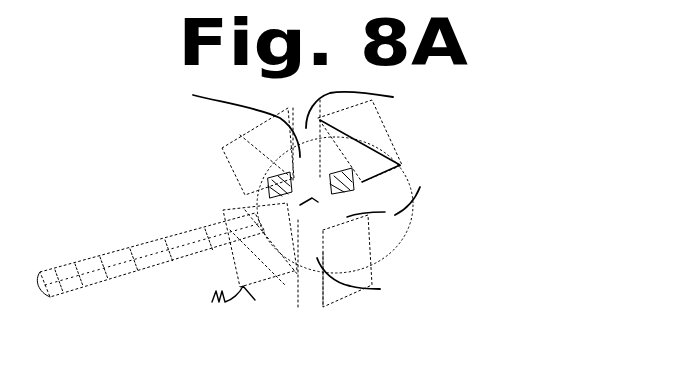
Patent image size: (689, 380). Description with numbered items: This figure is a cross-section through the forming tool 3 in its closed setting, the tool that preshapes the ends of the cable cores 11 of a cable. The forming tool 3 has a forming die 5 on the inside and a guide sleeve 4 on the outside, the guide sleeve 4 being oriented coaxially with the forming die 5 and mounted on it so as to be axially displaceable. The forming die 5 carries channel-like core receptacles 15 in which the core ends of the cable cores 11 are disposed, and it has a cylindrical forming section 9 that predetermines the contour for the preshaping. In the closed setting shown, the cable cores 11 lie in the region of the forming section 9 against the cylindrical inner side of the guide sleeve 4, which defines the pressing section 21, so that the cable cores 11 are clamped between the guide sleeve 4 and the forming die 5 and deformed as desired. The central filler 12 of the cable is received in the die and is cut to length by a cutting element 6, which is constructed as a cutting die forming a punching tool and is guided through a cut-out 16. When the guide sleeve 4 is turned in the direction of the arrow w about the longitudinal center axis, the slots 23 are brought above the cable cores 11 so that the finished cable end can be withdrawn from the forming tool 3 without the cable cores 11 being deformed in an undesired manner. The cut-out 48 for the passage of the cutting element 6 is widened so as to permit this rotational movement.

The forming tool 3 is at (215, 149).
The guide sleeve 4 is at (401, 218).
The forming die 5 is at (347, 217).
The cutting element 6 is at (80, 273).
The forming section 9 is at (378, 288).
The cable cores 11 is at (285, 190).
The filler 12 is at (312, 200).
The core receptacles 15 is at (285, 190).
The cut-out 16 is at (330, 198).
The pressing section 21 is at (219, 115).
The slots 23 is at (379, 100).
The cut-out 48 is at (222, 240).